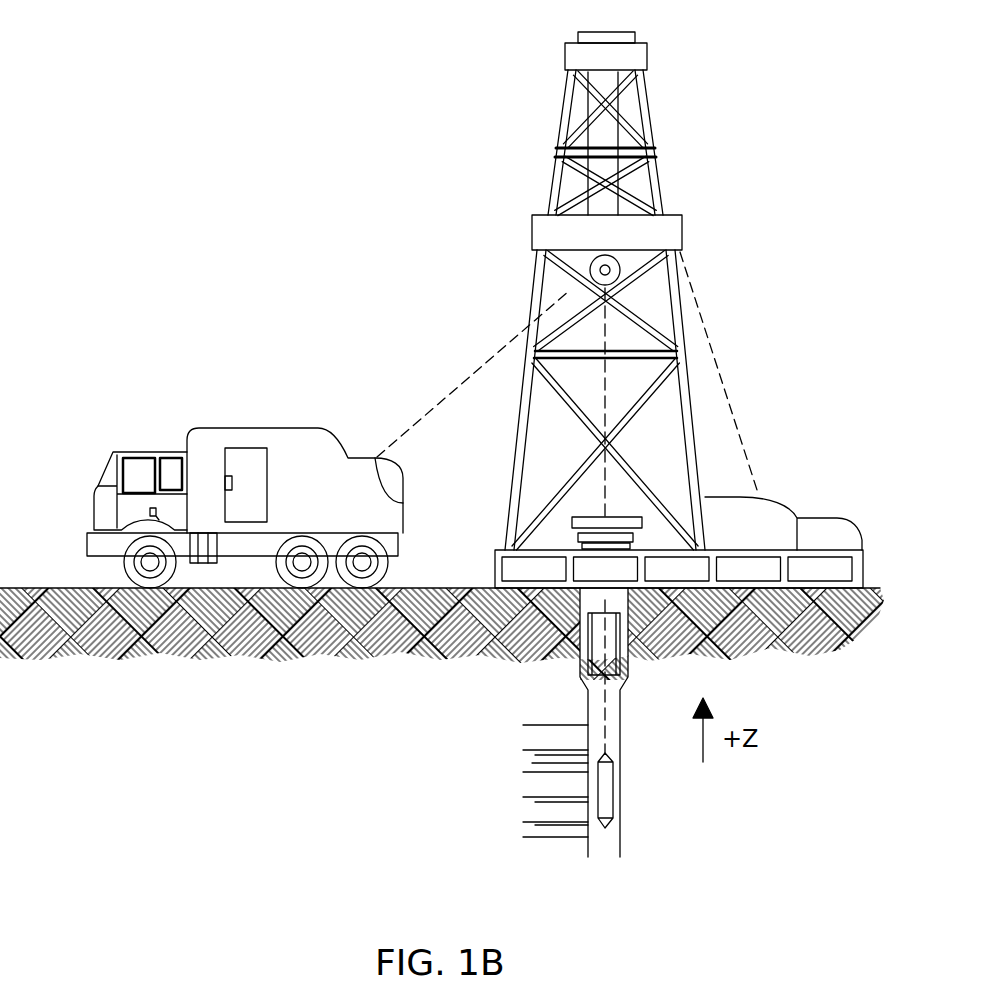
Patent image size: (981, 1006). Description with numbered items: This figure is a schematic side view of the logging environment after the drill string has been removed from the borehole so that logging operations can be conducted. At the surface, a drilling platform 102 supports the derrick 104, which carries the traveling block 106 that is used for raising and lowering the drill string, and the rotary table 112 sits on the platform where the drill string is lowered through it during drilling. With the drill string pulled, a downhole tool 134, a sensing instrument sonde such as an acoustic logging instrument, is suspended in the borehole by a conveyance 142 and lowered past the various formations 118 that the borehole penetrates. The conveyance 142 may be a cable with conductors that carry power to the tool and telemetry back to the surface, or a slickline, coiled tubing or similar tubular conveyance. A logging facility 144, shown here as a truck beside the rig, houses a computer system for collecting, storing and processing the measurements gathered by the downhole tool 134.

The drilling platform 102 is at (497, 572).
The derrick 104 is at (503, 532).
The traveling block 106 is at (620, 268).
The rotary table 112 is at (592, 517).
The formations 118 is at (512, 715).
The downhole tool 134 is at (613, 790).
The conveyance 142 is at (476, 372).
The logging facility 144 is at (262, 428).